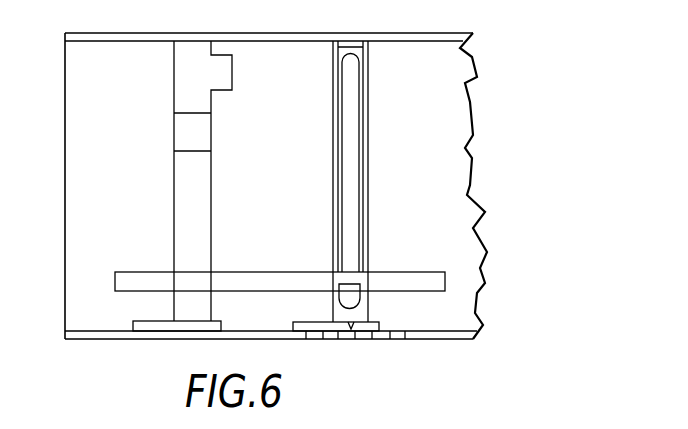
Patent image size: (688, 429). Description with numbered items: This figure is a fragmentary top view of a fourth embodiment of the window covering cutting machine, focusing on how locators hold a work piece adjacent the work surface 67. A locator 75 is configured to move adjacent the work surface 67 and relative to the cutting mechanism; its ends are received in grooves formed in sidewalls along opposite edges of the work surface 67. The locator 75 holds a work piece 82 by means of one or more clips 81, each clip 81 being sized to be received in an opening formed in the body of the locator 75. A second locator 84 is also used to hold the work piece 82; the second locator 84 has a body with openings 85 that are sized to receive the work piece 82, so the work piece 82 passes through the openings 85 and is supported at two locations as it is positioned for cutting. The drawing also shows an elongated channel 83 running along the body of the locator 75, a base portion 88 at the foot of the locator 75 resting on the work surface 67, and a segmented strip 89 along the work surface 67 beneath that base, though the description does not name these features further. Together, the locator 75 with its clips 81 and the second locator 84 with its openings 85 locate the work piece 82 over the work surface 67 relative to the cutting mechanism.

The work surface 67 is at (455, 175).
The locator 75 is at (368, 92).
The clip 81 is at (353, 290).
The work piece 82 is at (253, 278).
The channel 83 is at (350, 146).
The second locator 84 is at (174, 78).
The openings 85 is at (182, 131).
The base 88 is at (347, 326).
The floor strip 89 is at (373, 334).